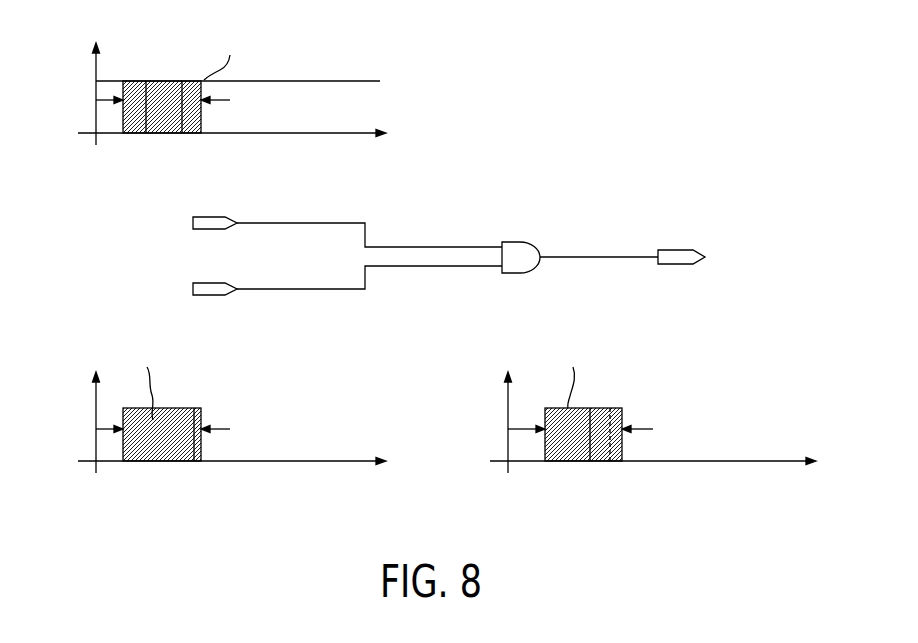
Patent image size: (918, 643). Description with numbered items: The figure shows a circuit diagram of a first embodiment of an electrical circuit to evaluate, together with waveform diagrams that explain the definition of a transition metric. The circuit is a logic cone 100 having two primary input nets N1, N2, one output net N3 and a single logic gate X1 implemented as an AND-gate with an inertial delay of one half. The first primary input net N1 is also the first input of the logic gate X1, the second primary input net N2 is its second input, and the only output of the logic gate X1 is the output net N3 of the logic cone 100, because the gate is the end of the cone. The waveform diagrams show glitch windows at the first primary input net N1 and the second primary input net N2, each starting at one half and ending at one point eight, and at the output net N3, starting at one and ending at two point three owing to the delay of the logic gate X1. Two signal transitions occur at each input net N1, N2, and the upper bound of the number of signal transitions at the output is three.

The logic cone 100 is at (460, 218).
The first primary input net N1 is at (222, 93).
The second primary input net N2 is at (222, 412).
The output net N3 is at (643, 412).
The logic gate X1 is at (449, 246).